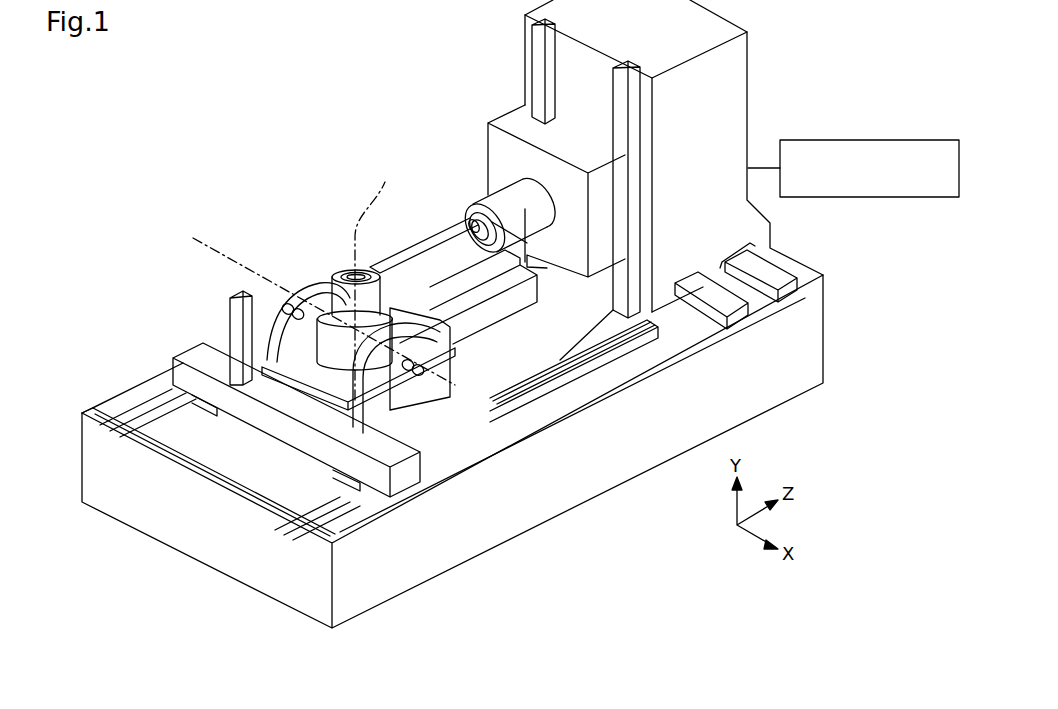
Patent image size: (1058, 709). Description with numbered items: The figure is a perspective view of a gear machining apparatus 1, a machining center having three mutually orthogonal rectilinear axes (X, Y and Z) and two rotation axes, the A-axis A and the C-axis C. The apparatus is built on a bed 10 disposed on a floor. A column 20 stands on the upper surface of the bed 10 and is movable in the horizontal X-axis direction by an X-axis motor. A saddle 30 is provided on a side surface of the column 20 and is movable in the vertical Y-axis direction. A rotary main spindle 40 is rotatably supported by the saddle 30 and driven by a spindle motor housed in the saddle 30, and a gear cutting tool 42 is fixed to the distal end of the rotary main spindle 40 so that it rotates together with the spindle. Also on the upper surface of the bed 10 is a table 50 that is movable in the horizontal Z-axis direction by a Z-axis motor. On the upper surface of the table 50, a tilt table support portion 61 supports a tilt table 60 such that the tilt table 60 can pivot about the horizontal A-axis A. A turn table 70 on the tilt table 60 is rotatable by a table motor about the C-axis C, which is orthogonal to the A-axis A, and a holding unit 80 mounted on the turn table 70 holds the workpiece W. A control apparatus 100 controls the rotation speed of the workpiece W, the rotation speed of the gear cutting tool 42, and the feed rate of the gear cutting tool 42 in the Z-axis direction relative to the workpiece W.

The gear machining apparatus 1 is at (268, 80).
The bed 10 is at (547, 520).
The column 20 is at (750, 110).
The saddle 30 is at (512, 112).
The rotary main spindle 40 is at (508, 198).
The gear cutting tool 42 is at (467, 230).
The table 50 is at (192, 357).
The tilt table 60 is at (290, 295).
The tilt table support portion 61 is at (395, 355).
The turn table 70 is at (325, 307).
The holding unit 80 is at (343, 263).
The workpiece W is at (367, 268).
The A-axis A is at (309, 305).
The C-axis C is at (372, 279).
The control apparatus 100 is at (893, 140).